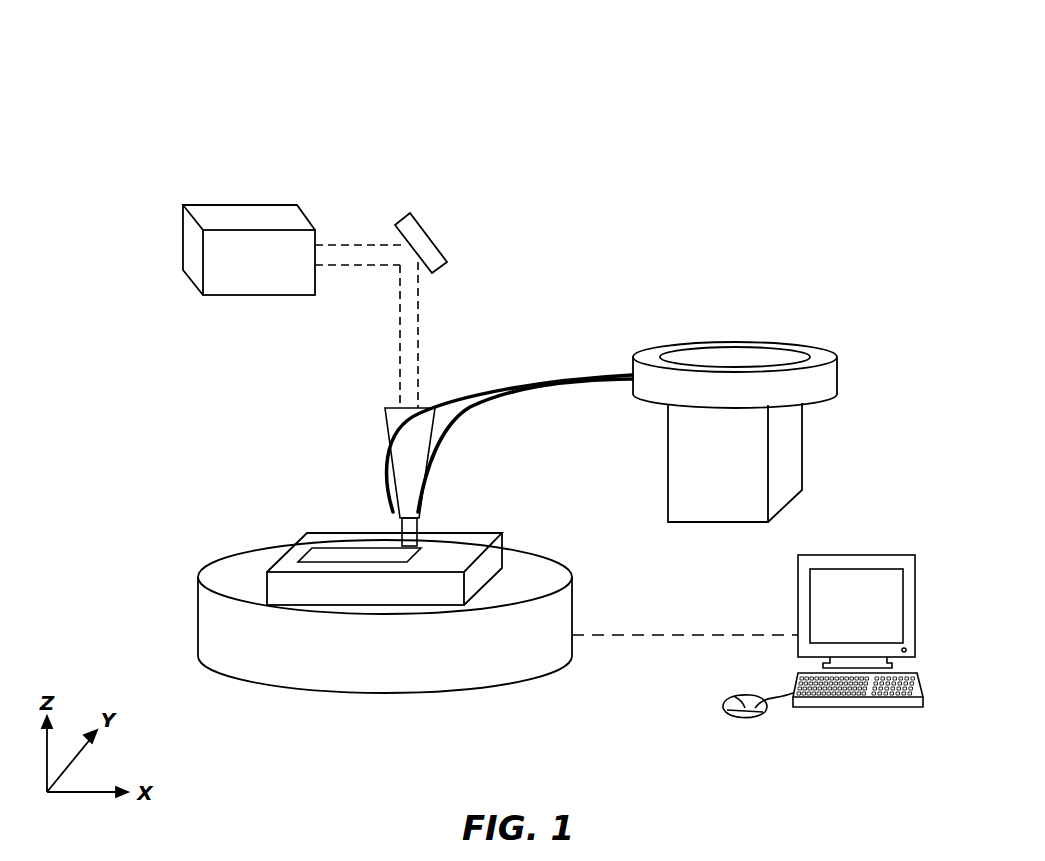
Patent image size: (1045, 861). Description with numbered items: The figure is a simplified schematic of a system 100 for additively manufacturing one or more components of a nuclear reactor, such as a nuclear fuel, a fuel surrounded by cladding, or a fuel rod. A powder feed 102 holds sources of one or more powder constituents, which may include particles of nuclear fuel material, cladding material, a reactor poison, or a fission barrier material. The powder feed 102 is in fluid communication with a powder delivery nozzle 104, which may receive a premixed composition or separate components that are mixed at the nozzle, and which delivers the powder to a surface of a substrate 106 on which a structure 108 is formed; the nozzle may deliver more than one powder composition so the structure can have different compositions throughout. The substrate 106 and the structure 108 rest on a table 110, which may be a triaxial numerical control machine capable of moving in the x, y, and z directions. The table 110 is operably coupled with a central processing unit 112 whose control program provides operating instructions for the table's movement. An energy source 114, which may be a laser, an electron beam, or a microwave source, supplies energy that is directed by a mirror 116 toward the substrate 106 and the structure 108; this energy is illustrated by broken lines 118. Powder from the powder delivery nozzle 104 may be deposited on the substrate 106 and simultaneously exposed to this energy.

The system 100 is at (192, 101).
The powder feed 102 is at (785, 446).
The powder delivery nozzle 104 is at (407, 452).
The substrate 106 is at (463, 543).
The structure 108 is at (323, 550).
The table 110 is at (215, 618).
The central processing unit 112 is at (868, 585).
The energy source 114 is at (258, 218).
The mirror 116 is at (408, 228).
The broken lines 118 is at (422, 314).